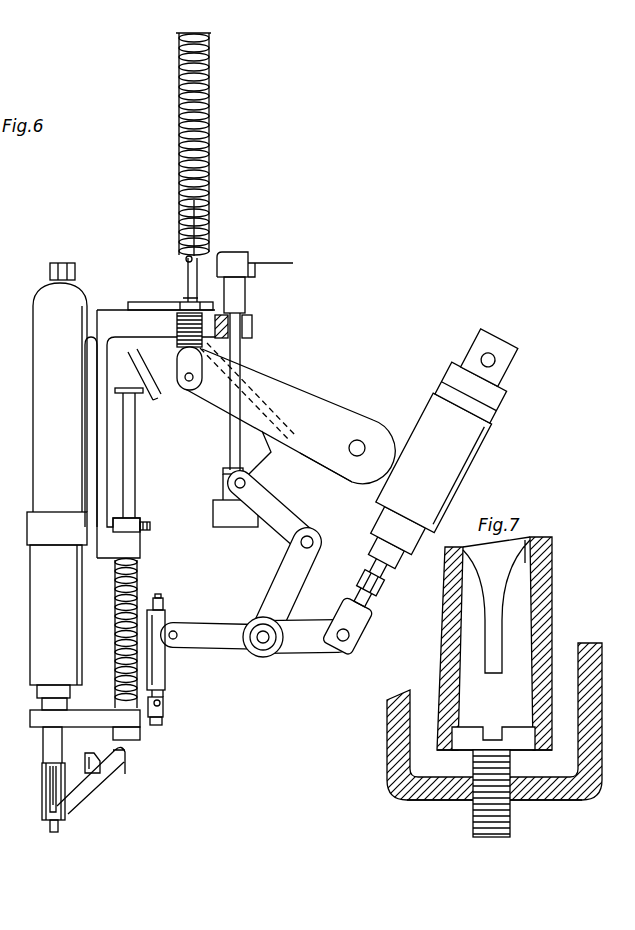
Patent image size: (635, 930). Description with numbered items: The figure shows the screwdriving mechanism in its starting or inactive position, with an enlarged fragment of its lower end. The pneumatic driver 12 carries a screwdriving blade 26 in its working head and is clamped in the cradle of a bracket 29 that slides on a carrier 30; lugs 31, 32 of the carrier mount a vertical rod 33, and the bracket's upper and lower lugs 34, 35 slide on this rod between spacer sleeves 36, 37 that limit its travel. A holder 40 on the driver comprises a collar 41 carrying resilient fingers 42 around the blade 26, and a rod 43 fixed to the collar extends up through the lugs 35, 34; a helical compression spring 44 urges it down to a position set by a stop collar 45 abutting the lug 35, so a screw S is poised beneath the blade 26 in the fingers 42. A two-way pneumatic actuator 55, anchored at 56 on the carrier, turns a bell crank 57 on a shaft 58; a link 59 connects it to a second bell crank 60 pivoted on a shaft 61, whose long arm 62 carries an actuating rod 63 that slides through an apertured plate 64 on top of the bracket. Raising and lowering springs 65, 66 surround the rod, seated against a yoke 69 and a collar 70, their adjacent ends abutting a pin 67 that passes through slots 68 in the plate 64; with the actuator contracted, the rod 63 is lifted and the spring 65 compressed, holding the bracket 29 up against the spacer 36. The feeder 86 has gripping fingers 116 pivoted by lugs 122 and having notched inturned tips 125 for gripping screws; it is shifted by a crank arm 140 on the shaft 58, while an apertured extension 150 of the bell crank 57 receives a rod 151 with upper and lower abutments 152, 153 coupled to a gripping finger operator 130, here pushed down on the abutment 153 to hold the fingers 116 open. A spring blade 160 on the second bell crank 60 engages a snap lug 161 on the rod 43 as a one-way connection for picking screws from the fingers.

In FIG. 6, the driver 12 is at (37, 398).
In FIG. 6, the screwdriving blade 26 is at (45, 790).
In FIG. 7, the screwdriving blade 26 is at (515, 575).
In FIG. 6, the bracket 29 is at (95, 460).
In FIG. 6, the carrier 30 is at (275, 262).
In FIG. 6, the lug 31 is at (257, 273).
In FIG. 6, the lug 32 is at (214, 500).
In FIG. 6, the vertical rod 33 is at (230, 441).
In FIG. 6, the upper lug 34 is at (119, 310).
In FIG. 6, the lower lug 35 is at (140, 548).
In FIG. 6, the spacer sleeve 36 is at (247, 297).
In FIG. 6, the spacer sleeve 37 is at (225, 468).
In FIG. 6, the holder 40 is at (42, 730).
In FIG. 6, the collar 41 is at (43, 712).
In FIG. 6, the resilient fingers 42 is at (65, 816).
In FIG. 7, the resilient fingers 42 is at (440, 670).
In FIG. 6, the rod 43 is at (150, 492).
In FIG. 6, the helical compression spring 44 is at (138, 567).
In FIG. 6, the stop collar 45 is at (146, 522).
In FIG. 6, the two-way pneumatic actuator 55 is at (416, 496).
In FIG. 6, the anchor 56 is at (491, 358).
In FIG. 6, the bell crank 57 is at (317, 652).
In FIG. 6, the shaft 58 is at (268, 626).
In FIG. 6, the link 59 is at (299, 521).
In FIG. 6, the second bell crank 60 is at (322, 484).
In FIG. 6, the shaft 61 is at (362, 430).
In FIG. 6, the long arm 62 is at (318, 408).
In FIG. 6, the actuating rod 63 is at (188, 211).
In FIG. 6, the apertured plate 64 is at (147, 311).
In FIG. 6, the raising spring 65 is at (182, 340).
In FIG. 6, the lowering spring 66 is at (210, 153).
In FIG. 6, the pin 67 is at (188, 264).
In FIG. 6, the slots 68 is at (193, 304).
In FIG. 6, the yoke 69 is at (183, 366).
In FIG. 6, the collar 70 is at (178, 36).
In FIG. 6, the feeder 86 is at (122, 773).
In FIG. 6, the gripping fingers 116 is at (135, 787).
In FIG. 7, the gripping fingers 116 is at (395, 757).
In FIG. 6, the lugs 122 is at (104, 760).
In FIG. 7, the inturned tips 125 is at (448, 797).
In FIG. 6, the gripping finger operator 130 is at (159, 719).
In FIG. 6, the crank arm 140 is at (201, 641).
In FIG. 6, the apertured extension 150 is at (162, 665).
In FIG. 6, the rod 151 is at (163, 612).
In FIG. 6, the upper abutment 152 is at (160, 598).
In FIG. 6, the lower abutment 153 is at (161, 705).
In FIG. 6, the spring blade 160 is at (262, 392).
In FIG. 6, the snap lug 161 is at (147, 401).
In FIG. 6, the screw S is at (58, 829).
In FIG. 7, the screw S is at (480, 833).